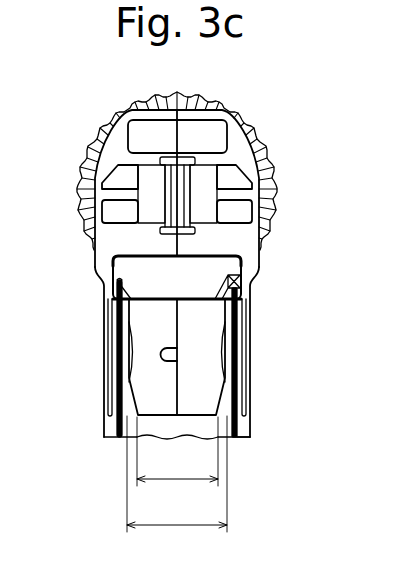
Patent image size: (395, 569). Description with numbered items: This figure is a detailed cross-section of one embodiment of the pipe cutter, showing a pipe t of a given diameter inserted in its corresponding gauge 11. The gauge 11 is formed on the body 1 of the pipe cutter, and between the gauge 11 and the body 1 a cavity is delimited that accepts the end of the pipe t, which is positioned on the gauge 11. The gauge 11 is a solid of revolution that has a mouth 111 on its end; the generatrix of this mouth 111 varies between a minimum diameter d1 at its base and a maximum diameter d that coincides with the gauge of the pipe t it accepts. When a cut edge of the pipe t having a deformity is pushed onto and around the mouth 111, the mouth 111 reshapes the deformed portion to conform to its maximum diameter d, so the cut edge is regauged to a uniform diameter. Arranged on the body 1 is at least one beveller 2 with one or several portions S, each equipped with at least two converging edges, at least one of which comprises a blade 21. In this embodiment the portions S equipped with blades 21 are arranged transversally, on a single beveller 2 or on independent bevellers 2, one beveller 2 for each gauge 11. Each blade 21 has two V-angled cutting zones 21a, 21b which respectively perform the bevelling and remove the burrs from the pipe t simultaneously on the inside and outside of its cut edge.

The beveller 2 is at (136, 249).
The blade 21 is at (227, 241).
The V angled cutting zone 21a is at (197, 268).
The V angled cutting zone 21b is at (252, 281).
The body 1 is at (156, 334).
The gauge 11 is at (180, 369).
The mouth 111 is at (128, 399).
The portion S is at (127, 268).
The pipe t is at (250, 438).
The minimum diameter d1 is at (177, 451).
The maximum diameter d is at (177, 474).